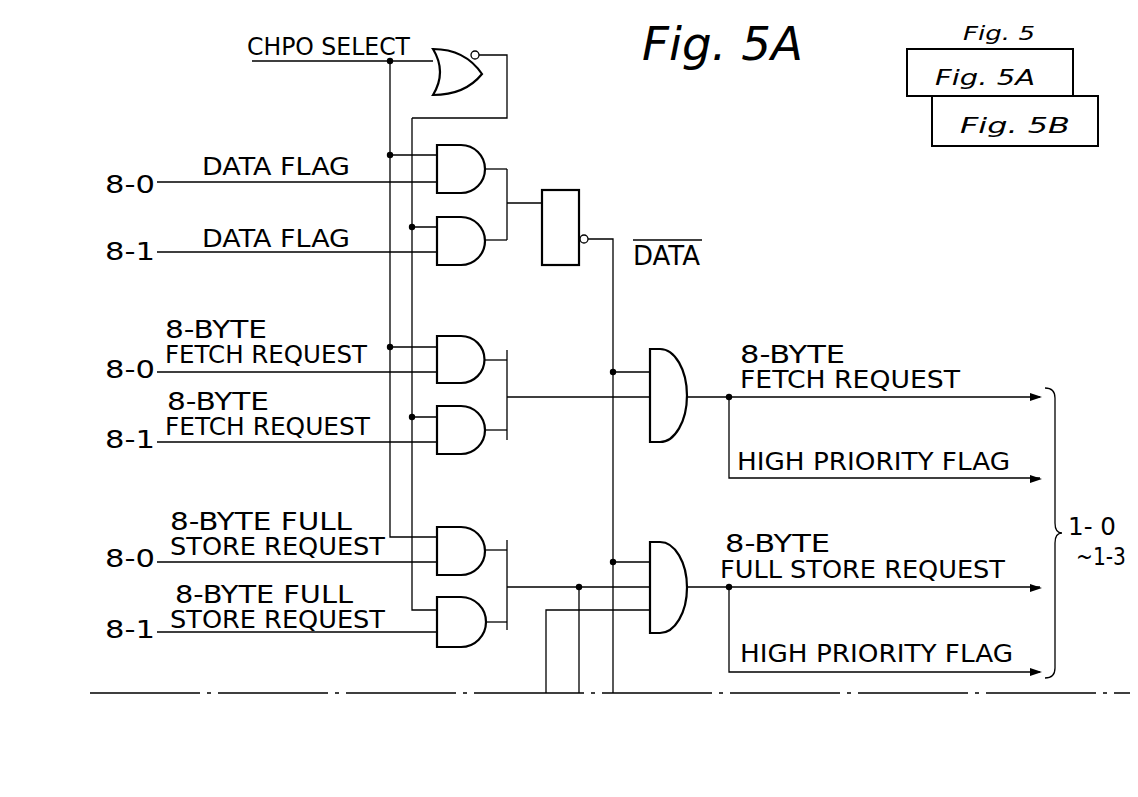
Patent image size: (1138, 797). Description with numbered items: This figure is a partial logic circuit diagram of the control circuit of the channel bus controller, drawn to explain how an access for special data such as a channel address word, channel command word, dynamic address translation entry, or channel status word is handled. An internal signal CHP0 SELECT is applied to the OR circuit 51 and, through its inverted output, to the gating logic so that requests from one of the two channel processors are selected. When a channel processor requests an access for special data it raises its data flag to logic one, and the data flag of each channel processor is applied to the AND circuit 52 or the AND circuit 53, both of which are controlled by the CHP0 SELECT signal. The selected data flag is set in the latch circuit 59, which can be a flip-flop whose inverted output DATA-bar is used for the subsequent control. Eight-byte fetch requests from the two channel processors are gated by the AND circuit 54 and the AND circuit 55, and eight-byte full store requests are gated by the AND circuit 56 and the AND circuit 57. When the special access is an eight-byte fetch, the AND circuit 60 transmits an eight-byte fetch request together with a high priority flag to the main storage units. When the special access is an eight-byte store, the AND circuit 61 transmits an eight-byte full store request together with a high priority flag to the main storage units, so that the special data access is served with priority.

The OR circuit 51 is at (470, 50).
The AND circuit 52 is at (480, 152).
The AND circuit 53 is at (472, 265).
The AND circuit 54 is at (478, 340).
The AND circuit 55 is at (476, 452).
The AND circuit 56 is at (480, 532).
The AND circuit 57 is at (470, 647).
The latch circuit 59 is at (567, 190).
The AND circuit 60 is at (672, 349).
The AND circuit 61 is at (672, 542).